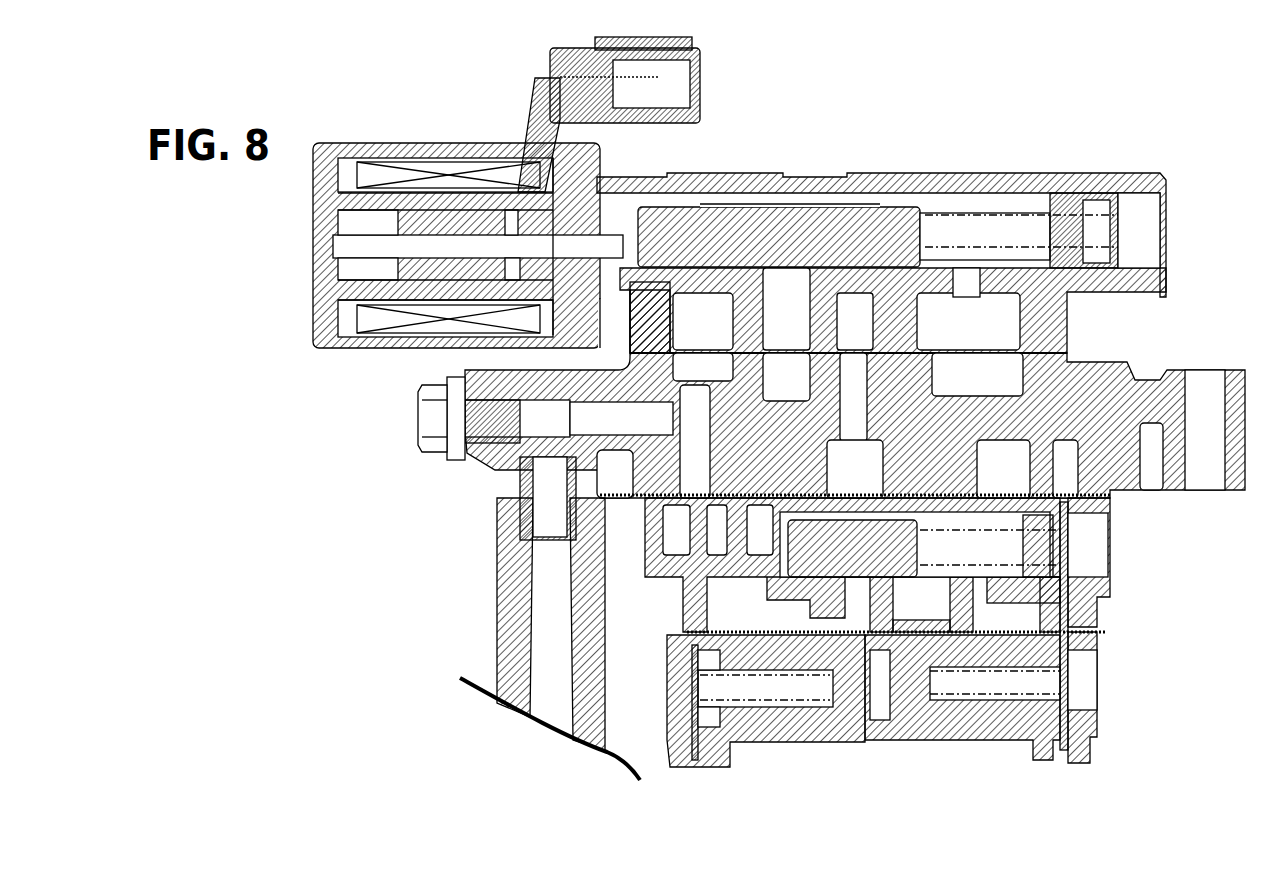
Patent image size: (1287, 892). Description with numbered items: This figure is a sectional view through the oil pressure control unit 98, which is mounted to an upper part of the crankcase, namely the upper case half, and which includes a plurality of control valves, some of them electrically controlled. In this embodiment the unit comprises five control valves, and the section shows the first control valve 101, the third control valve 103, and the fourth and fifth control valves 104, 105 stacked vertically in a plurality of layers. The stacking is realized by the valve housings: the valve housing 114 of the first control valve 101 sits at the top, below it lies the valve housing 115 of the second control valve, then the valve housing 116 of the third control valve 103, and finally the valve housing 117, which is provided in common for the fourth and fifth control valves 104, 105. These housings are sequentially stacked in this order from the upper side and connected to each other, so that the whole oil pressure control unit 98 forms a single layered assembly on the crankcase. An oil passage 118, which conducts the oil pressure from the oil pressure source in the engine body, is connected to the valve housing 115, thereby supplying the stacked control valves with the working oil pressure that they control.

The oil pressure control unit 98 is at (1128, 550).
The first control valve 101 is at (918, 167).
The third control valve 103 is at (884, 518).
The fourth control valve 104 is at (925, 713).
The fifth control valve 105 is at (764, 732).
The valve housing 114 is at (769, 192).
The valve housing 115 is at (1108, 362).
The valve housing 116 is at (1090, 602).
The valve housing 117 is at (1088, 742).
The oil passage 118 is at (524, 601).